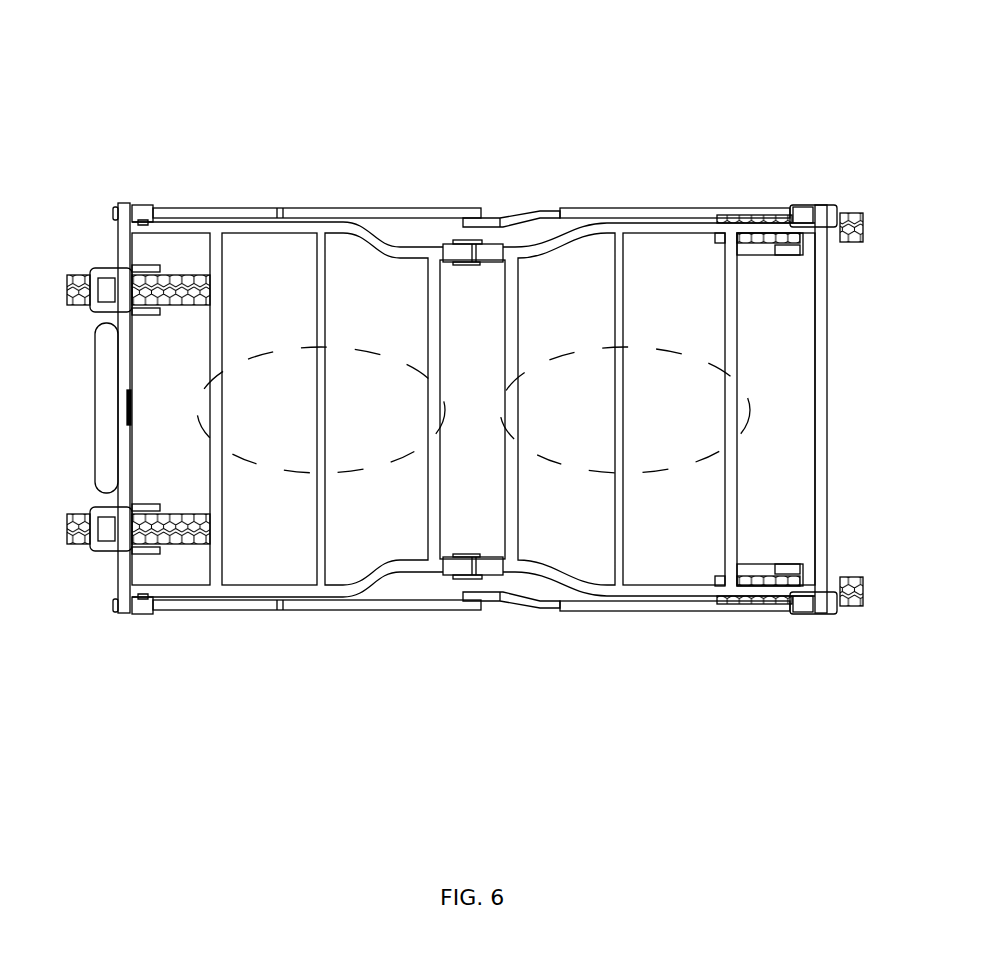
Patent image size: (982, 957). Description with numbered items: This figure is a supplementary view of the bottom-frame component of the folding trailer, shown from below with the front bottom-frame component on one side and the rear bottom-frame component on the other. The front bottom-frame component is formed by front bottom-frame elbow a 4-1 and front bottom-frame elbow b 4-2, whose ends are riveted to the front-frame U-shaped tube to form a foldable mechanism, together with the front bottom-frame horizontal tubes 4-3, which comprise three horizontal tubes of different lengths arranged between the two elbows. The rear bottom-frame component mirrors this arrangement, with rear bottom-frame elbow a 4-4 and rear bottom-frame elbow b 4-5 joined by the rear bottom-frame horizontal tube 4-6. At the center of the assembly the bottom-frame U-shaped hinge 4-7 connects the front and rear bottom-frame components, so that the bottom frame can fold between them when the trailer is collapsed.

The front bottom-frame elbow a 4-1 is at (270, 583).
The front bottom-frame elbow b 4-2 is at (375, 232).
The front bottom-frame horizontal tube 4-3 is at (288, 348).
The rear bottom-frame elbow a 4-4 is at (675, 597).
The rear bottom-frame elbow b 4-5 is at (608, 218).
The rear bottom-frame horizontal tube 4-6 is at (585, 347).
The bottom-frame U-shaped hinge 4-7 is at (478, 266).